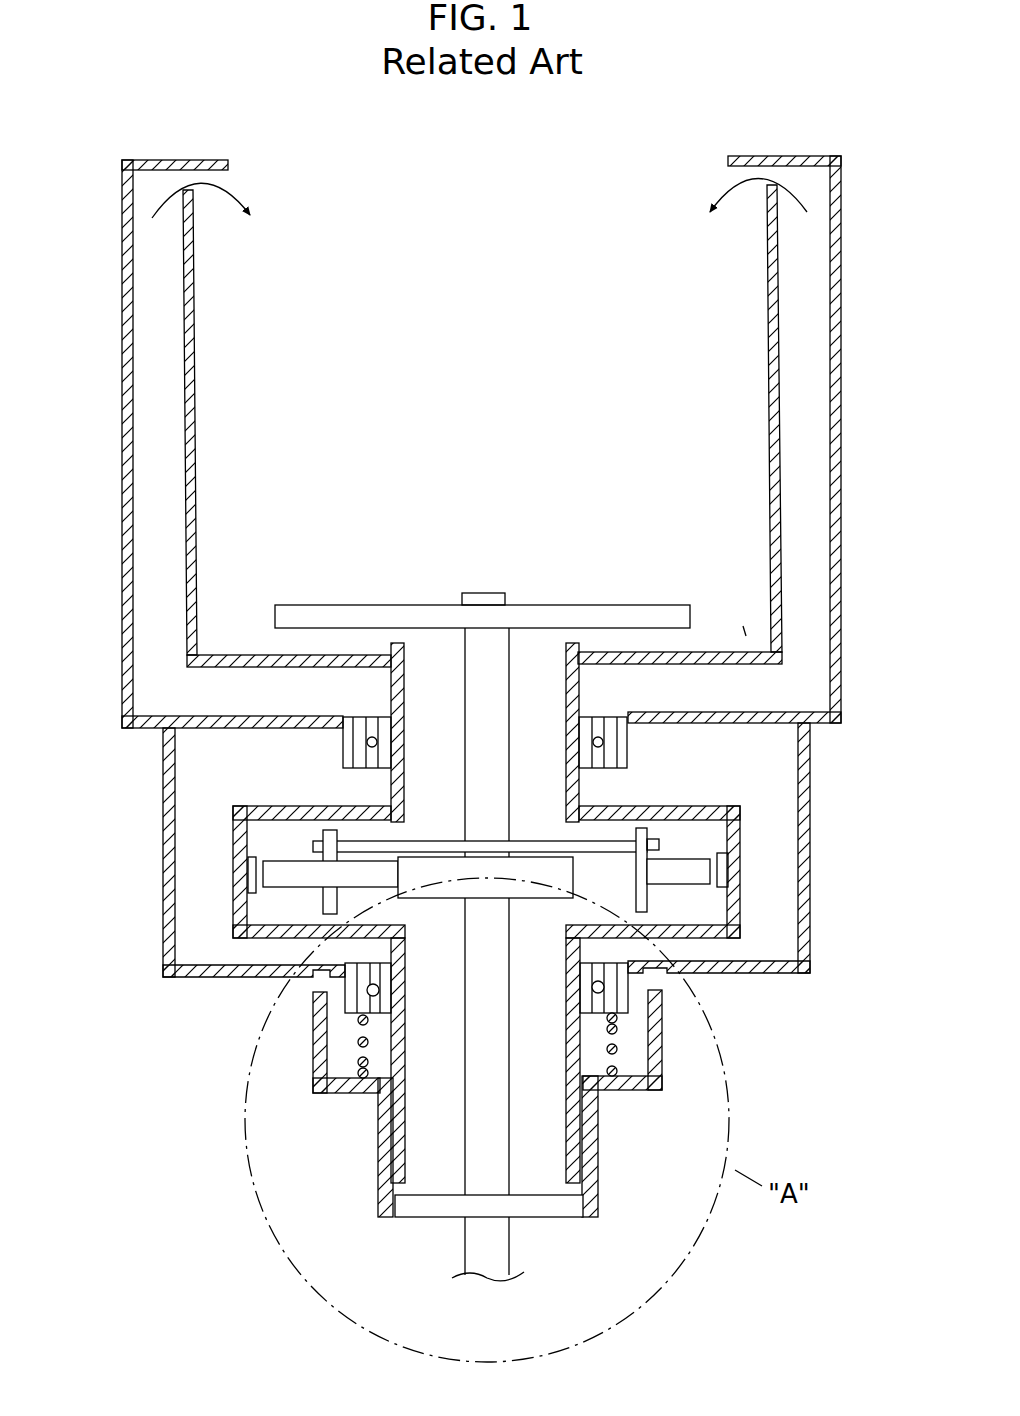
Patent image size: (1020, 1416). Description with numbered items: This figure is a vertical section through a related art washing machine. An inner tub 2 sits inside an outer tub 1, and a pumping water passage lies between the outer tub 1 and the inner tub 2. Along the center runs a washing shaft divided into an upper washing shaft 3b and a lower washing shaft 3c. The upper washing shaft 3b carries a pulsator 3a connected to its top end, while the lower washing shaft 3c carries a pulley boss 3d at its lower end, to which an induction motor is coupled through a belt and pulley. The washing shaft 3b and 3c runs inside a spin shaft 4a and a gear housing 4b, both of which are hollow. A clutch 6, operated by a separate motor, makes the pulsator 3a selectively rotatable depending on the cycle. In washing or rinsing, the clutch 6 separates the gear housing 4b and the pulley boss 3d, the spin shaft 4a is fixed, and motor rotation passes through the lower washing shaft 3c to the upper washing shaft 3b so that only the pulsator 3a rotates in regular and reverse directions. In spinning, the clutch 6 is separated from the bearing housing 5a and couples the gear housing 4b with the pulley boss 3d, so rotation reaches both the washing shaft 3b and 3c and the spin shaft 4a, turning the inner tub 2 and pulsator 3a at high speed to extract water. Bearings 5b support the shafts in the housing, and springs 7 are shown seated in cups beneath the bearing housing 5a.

The outer tub 1 is at (123, 316).
The inner tub 2 is at (189, 440).
The pulsator 3a is at (350, 606).
The upper washing shaft 3b is at (481, 594).
The lower washing shaft 3c is at (497, 1158).
The pulley boss 3d is at (545, 1208).
The spin shaft 4a is at (579, 790).
The gear housing 4b is at (741, 870).
The bearing housing 5a is at (164, 890).
The bearing 5b is at (318, 993).
The clutch 6 is at (662, 1050).
The spring 7 is at (358, 1063).